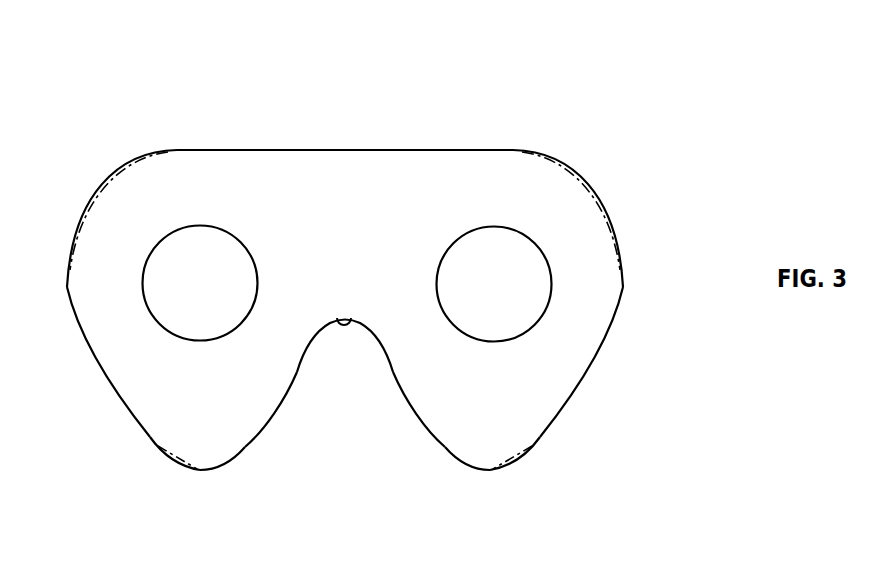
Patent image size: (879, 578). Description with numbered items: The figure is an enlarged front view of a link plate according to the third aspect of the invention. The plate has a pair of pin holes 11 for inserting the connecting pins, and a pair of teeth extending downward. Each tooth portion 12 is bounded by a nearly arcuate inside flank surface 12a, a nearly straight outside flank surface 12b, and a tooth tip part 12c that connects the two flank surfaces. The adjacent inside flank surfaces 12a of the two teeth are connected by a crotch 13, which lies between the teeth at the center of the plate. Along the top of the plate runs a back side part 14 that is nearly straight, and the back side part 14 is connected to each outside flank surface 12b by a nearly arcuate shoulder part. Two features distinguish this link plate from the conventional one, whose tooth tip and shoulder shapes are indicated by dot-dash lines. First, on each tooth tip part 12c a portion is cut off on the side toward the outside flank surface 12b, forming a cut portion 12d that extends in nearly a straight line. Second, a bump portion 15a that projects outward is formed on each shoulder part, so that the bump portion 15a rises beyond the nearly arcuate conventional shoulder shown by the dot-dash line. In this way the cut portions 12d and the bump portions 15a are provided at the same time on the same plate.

The pin holes 11 is at (243, 240).
The tooth portion 12 is at (247, 437).
The inside flank surface 12a is at (397, 382).
The outside flank surface 12b is at (108, 370).
The tooth tip part 12c is at (213, 470).
The cut portion 12d is at (170, 463).
The crotch 13 is at (349, 318).
The back side part 14 is at (332, 149).
The bump portion 15a is at (110, 168).